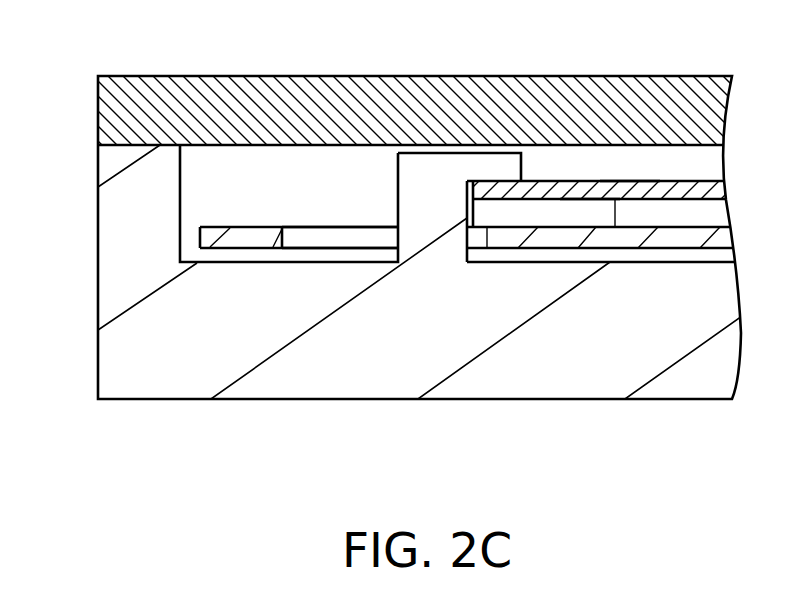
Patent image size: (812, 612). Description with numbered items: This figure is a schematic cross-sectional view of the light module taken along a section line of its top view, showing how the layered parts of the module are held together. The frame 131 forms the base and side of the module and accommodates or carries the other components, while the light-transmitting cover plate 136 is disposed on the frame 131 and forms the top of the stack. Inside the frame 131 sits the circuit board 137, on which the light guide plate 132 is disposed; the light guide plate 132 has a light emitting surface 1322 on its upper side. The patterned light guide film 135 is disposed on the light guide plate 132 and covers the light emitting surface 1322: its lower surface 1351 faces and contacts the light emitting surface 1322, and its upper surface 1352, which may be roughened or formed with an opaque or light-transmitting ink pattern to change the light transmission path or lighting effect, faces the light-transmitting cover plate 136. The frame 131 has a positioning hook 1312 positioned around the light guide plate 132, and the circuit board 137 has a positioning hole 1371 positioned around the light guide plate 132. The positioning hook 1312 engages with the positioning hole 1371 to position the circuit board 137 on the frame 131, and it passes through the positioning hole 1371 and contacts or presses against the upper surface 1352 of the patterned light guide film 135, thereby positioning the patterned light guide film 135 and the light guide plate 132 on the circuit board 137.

The frame 131 is at (123, 335).
The positioning hook 1312 is at (458, 162).
The light guide plate 132 is at (712, 215).
The light emitting surface 1322 is at (543, 200).
The patterned light guide film 135 is at (715, 190).
The lower surface 1351 is at (590, 202).
The upper surface 1352 is at (623, 179).
The light-transmitting cover plate 136 is at (715, 115).
The circuit board 137 is at (243, 240).
The positioning hole 1371 is at (342, 240).